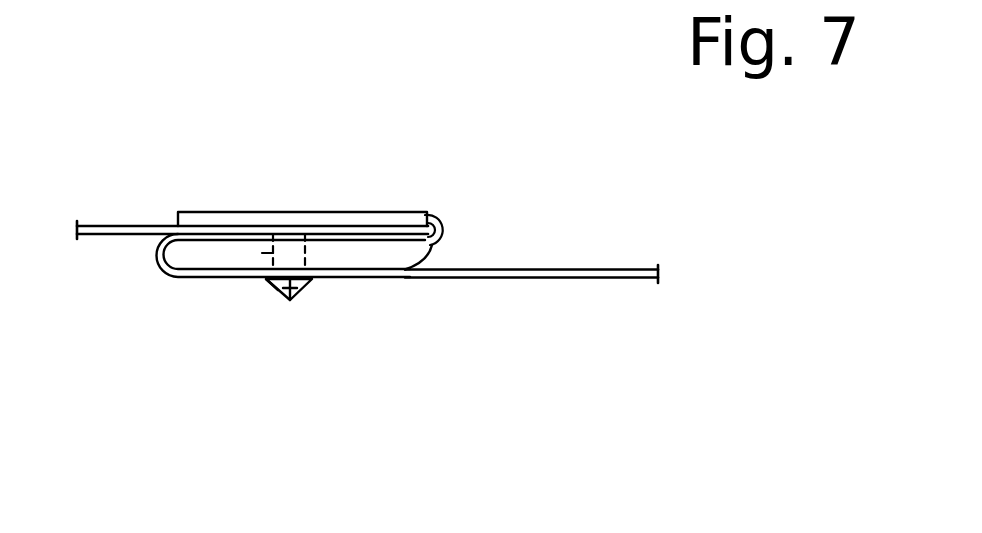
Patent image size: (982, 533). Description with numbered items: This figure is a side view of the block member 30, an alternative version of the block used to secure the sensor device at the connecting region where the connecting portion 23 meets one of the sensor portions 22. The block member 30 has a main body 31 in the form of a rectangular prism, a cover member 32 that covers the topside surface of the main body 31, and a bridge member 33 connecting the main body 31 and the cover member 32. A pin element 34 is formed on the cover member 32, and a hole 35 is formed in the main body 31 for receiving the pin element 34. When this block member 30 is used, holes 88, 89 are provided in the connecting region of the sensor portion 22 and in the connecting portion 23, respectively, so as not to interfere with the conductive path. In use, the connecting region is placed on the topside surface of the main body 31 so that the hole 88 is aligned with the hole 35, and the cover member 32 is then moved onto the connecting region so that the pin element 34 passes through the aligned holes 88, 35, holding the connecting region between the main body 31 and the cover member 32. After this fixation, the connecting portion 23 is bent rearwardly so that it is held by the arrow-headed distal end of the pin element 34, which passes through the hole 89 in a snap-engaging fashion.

The sensor portion 22 is at (108, 225).
The connecting portion 23 is at (612, 269).
The block member 30 is at (415, 203).
The main body 31 is at (385, 253).
The cover member 32 is at (343, 212).
The bridge member 33 is at (438, 224).
The pin element 34 is at (288, 297).
The hole 35 is at (273, 253).
The hole 88 is at (274, 233).
The hole 89 is at (270, 285).